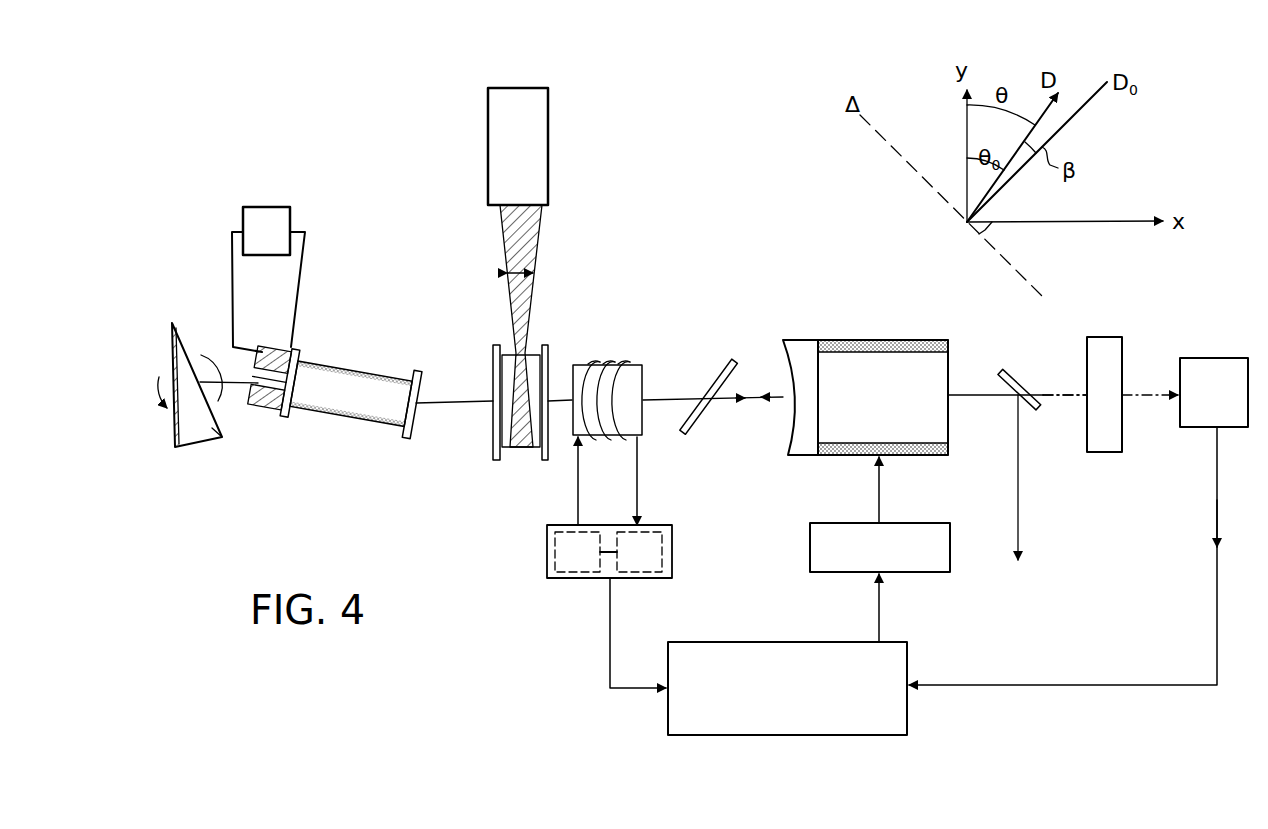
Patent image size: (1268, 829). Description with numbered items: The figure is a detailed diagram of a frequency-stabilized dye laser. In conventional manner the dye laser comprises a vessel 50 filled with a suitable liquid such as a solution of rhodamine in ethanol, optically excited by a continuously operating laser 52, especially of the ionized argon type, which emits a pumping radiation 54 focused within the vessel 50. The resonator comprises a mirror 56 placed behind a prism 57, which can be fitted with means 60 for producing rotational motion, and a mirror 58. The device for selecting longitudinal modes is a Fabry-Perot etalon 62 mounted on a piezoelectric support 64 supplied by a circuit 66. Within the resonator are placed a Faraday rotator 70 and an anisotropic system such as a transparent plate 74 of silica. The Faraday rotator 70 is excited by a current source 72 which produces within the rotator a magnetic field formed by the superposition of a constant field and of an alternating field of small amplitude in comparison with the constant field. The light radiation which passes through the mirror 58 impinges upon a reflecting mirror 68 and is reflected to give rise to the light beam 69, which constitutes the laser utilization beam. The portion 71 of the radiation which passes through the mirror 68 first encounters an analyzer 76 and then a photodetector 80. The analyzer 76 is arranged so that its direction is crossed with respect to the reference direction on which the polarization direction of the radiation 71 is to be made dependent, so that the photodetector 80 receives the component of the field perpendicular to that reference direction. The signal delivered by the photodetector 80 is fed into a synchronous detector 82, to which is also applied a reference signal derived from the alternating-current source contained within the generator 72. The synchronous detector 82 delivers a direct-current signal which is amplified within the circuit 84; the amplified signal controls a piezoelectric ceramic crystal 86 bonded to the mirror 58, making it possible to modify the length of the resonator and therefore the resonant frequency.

The vessel 50 is at (508, 428).
The continuously operating laser 52 is at (518, 146).
The pumping radiation 54 is at (533, 230).
The mirror 56 is at (171, 432).
The prism 57 is at (212, 428).
The mirror 58 is at (787, 437).
The means for producing rotational motion 60 is at (161, 375).
The Fabry-Perot etalon 62 is at (365, 367).
The piezoelectric support 64 is at (270, 407).
The circuit 66 is at (269, 215).
The reflecting mirror 68 is at (1001, 372).
The light beam 69 is at (1020, 508).
The Faraday rotator 70 is at (600, 360).
The portion of the radiation 71 is at (1062, 393).
The current source 72 is at (548, 565).
The transparent plate 74 is at (723, 367).
The analyzer 76 is at (1107, 347).
The photodetector 80 is at (1078, 521).
The synchronous detector 82 is at (787, 688).
The circuit 84 is at (880, 549).
The piezoelectric ceramic crystal 86 is at (862, 340).